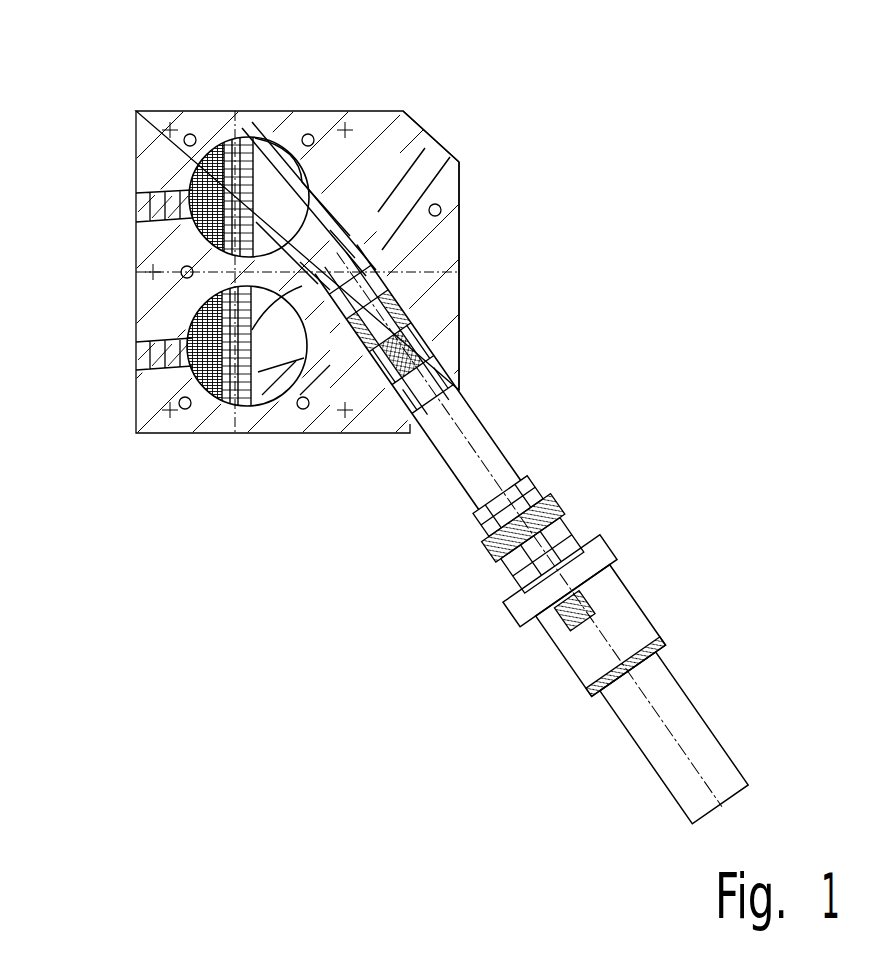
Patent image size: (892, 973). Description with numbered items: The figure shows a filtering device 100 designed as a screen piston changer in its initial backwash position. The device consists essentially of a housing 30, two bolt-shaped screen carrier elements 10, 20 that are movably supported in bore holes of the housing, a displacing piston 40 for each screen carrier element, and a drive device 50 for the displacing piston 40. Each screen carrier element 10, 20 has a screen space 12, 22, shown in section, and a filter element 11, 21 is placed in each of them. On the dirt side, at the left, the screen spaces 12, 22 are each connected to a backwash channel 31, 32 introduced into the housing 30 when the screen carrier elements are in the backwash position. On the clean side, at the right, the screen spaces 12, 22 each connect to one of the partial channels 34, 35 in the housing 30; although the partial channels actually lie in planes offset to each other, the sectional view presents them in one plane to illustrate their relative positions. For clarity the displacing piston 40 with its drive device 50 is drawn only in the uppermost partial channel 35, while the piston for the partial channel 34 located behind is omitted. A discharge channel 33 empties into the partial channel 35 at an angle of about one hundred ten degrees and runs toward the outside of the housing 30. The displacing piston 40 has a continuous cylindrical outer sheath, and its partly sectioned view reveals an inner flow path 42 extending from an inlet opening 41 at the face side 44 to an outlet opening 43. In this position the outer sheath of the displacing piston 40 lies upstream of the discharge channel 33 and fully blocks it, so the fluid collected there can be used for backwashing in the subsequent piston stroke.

The filtering device 100 is at (740, 76).
The screen carrier element 10 is at (238, 146).
The filter element 11 is at (235, 175).
The screen space 12 is at (283, 203).
The screen carrier element 20 is at (263, 589).
The filter element 21 is at (232, 380).
The screen space 22 is at (283, 347).
The housing 30 is at (136, 272).
The backwash channel 31 is at (136, 214).
The backwash channel 32 is at (136, 363).
The discharge channel 33 is at (459, 272).
The partial channel 34 is at (432, 165).
The partial channel 35 is at (318, 245).
The displacing piston 40 is at (473, 455).
The inlet opening 41 is at (372, 312).
The inner flow path 42 is at (403, 361).
The outlet opening 43 is at (447, 382).
The face side 44 is at (380, 192).
The drive device 50 is at (683, 720).